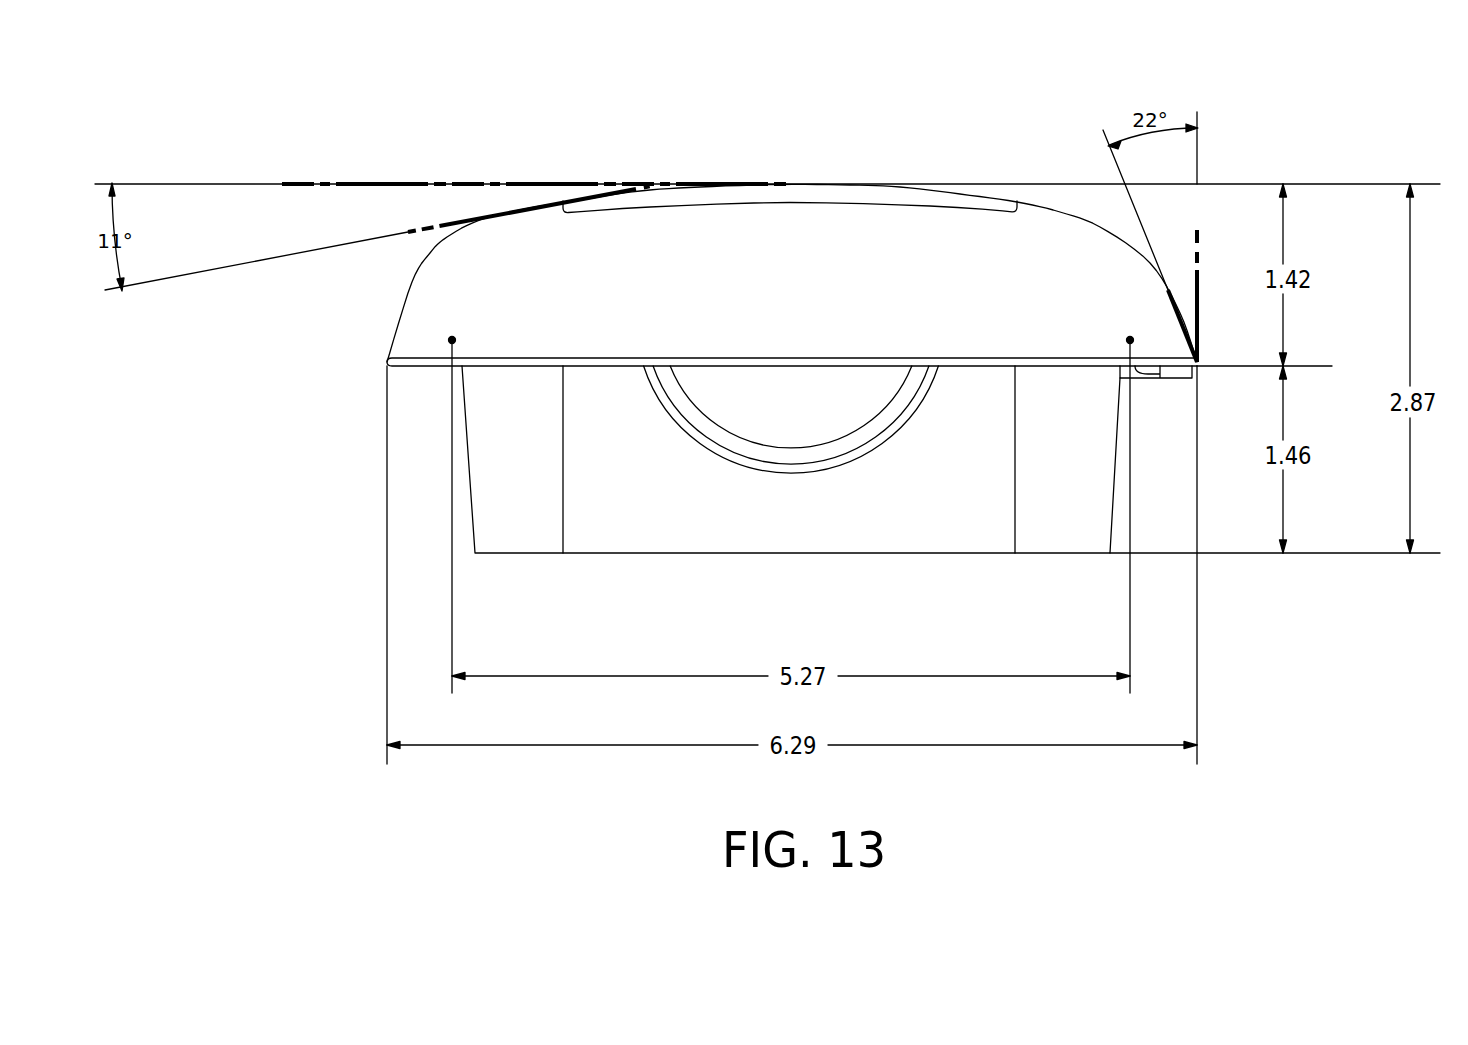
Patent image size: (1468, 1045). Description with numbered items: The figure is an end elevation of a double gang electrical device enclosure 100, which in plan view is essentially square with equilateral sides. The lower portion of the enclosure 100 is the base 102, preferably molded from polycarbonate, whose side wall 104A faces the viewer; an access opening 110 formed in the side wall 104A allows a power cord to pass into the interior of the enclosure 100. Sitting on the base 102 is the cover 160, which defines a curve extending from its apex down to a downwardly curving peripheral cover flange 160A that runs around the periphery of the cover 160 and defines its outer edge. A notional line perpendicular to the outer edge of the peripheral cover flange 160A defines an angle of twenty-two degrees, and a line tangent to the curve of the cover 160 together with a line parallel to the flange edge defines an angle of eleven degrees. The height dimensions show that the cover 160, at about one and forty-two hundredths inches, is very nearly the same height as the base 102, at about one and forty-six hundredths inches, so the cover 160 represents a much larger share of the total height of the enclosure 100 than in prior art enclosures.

The double gang electrical device enclosure 100 is at (827, 157).
The base 102 is at (536, 575).
The side wall 104A is at (672, 478).
The access opening 110 is at (818, 441).
The cover 160 is at (386, 292).
The peripheral cover flange 160A is at (462, 370).